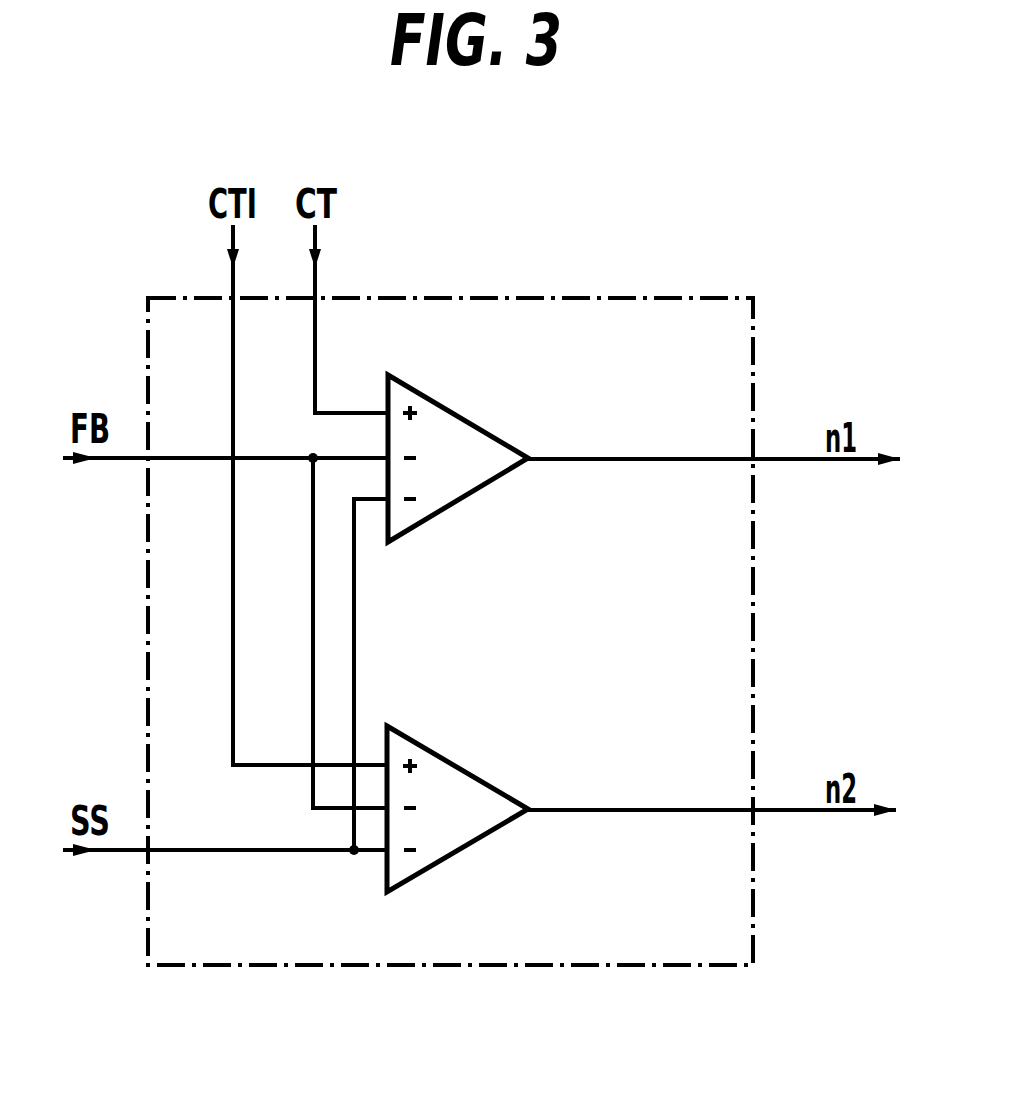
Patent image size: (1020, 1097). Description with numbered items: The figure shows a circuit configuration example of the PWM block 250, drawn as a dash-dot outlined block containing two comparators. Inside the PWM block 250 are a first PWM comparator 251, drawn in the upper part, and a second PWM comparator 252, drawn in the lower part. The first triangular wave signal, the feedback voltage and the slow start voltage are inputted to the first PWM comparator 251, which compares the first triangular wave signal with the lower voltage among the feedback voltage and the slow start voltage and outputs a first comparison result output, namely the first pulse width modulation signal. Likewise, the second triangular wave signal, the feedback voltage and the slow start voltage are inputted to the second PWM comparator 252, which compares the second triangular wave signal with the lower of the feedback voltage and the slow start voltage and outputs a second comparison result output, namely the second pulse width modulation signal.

The PWM block 250 is at (567, 298).
The first PWM comparator 251 is at (482, 425).
The second PWM comparator 252 is at (482, 777).